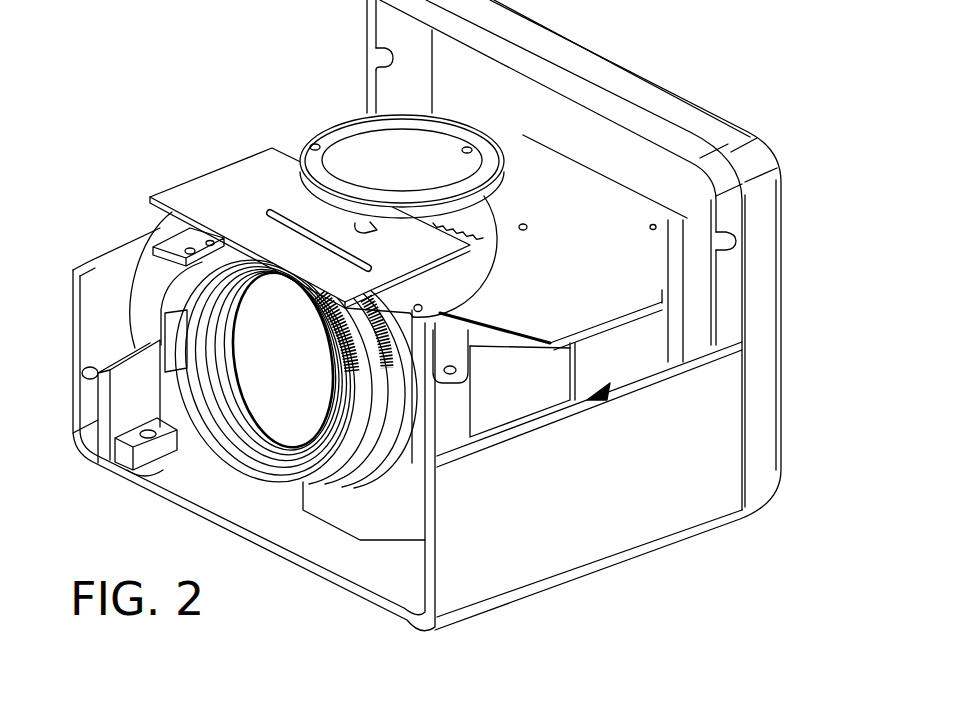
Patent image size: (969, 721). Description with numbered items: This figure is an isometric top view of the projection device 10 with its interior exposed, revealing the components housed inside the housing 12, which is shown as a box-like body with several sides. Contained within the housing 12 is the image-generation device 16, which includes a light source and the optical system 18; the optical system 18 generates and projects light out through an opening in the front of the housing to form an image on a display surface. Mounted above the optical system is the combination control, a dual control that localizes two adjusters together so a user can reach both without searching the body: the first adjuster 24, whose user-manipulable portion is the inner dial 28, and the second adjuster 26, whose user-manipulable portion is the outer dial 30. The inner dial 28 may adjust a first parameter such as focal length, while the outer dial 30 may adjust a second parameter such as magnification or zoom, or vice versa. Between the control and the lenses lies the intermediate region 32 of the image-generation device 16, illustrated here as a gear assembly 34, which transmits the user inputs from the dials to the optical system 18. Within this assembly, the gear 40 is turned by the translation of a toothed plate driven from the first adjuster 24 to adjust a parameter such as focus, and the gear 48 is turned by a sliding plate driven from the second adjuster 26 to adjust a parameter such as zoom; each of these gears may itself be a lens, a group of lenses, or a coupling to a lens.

The projection device 10 is at (746, 72).
The housing 12 is at (743, 128).
The image-generation device 16 is at (226, 106).
The optical system 18 is at (609, 360).
The first adjuster 24 is at (350, 150).
The second adjuster 26 is at (348, 118).
The inner dial 28 is at (424, 180).
The outer dial 30 is at (495, 187).
The intermediate region 32 is at (191, 163).
The gear assembly 34 is at (422, 283).
The gear 40 is at (360, 468).
The gear 48 is at (330, 455).